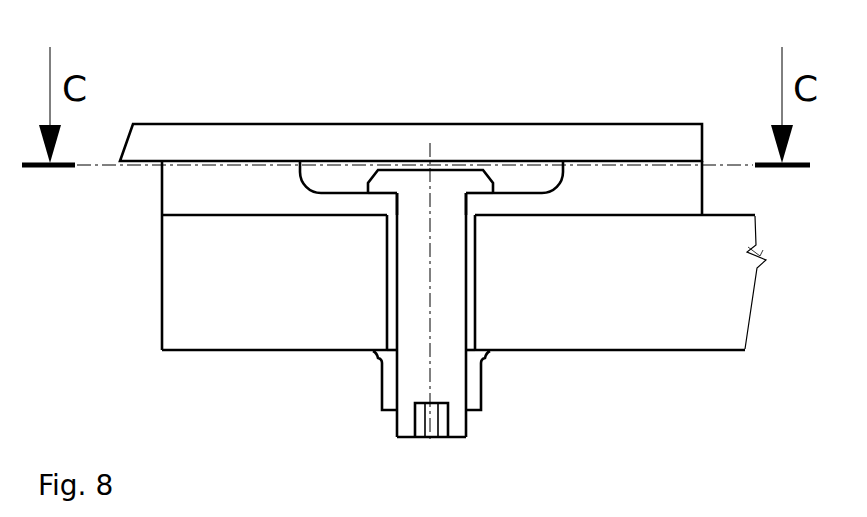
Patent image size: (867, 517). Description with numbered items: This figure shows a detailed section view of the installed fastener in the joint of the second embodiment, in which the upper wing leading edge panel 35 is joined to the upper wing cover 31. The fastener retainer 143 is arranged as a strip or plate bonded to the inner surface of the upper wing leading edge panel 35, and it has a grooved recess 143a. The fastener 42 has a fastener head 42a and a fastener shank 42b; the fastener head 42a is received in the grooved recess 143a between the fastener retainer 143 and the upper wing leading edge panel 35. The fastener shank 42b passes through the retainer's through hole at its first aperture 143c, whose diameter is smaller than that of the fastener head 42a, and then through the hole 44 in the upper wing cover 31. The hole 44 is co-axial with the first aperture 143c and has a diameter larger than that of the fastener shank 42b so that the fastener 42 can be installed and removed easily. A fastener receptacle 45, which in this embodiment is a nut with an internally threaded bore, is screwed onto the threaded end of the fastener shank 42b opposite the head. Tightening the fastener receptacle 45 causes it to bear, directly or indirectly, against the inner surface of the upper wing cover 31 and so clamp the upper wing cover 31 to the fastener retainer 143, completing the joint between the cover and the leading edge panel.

The upper wing leading edge panel 35 is at (204, 131).
The fastener retainer 143 is at (417, 141).
The grooved recess 143a is at (308, 185).
The first aperture 143c is at (467, 203).
The fastener 42 is at (418, 233).
The fastener head 42a is at (476, 181).
The fastener shank 42b is at (423, 307).
The hole in the upper wing cover 44 is at (387, 281).
The fastener receptacle 45 is at (388, 376).
The upper wing cover 31 is at (702, 307).